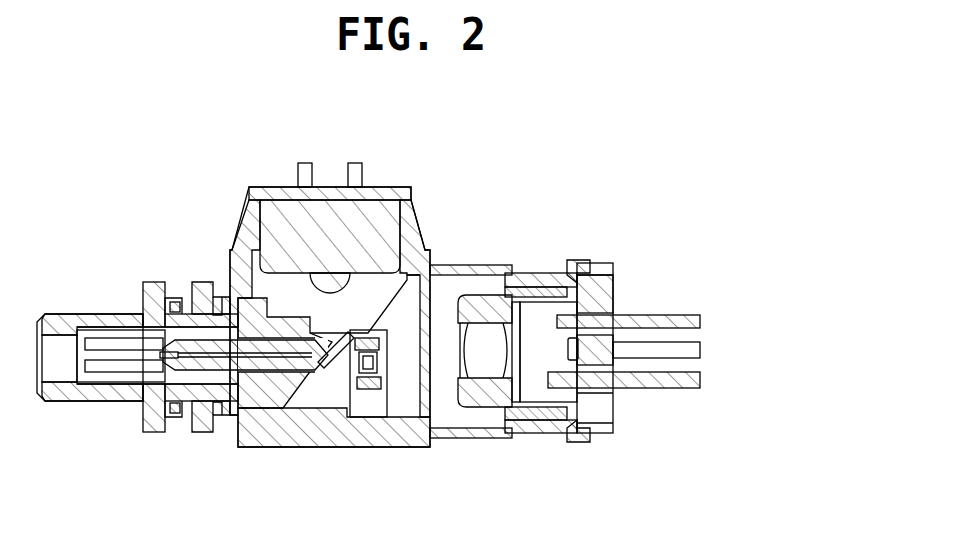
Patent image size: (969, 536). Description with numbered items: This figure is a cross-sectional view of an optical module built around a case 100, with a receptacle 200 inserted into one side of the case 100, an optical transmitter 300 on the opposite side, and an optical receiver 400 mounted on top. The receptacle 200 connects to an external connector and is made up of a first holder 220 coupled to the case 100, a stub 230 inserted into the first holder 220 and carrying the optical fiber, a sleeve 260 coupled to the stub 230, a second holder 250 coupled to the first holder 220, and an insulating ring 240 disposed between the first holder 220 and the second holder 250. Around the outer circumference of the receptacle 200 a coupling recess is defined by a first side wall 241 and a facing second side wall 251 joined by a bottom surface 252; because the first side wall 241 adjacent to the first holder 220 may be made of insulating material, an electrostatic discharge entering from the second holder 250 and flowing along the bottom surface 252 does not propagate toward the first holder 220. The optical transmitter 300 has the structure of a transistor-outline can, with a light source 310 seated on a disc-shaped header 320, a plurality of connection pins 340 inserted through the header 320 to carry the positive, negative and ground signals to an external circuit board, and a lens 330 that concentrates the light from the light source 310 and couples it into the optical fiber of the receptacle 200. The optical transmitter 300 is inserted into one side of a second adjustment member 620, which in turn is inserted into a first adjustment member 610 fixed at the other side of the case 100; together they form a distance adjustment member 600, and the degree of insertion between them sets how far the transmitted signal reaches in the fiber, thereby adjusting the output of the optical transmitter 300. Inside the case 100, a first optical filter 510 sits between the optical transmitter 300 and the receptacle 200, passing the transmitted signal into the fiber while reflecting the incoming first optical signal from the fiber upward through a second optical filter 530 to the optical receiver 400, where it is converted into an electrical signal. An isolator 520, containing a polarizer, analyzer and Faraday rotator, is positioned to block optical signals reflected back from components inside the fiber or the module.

The case 100 is at (232, 262).
The receptacle 200 is at (184, 360).
The first holder 220 is at (275, 395).
The stub 230 is at (256, 372).
The insulating ring 240 is at (199, 278).
The first side wall 241 is at (198, 432).
The second holder 250 is at (92, 300).
The second side wall 251 is at (143, 282).
The bottom surface 252 is at (175, 296).
The sleeve 260 is at (108, 401).
The optical transmitter 300 is at (579, 387).
The light source 310 is at (548, 430).
The header 320 is at (603, 420).
The lens 330 is at (488, 358).
The connection pins 340 is at (624, 397).
The optical receiver 400 is at (340, 210).
The first optical filter 510 is at (338, 370).
The isolator 520 is at (376, 400).
The second optical filter 530 is at (266, 187).
The distance adjustment member 600 is at (510, 317).
The first adjustment member 610 is at (488, 262).
The second adjustment member 620 is at (547, 330).